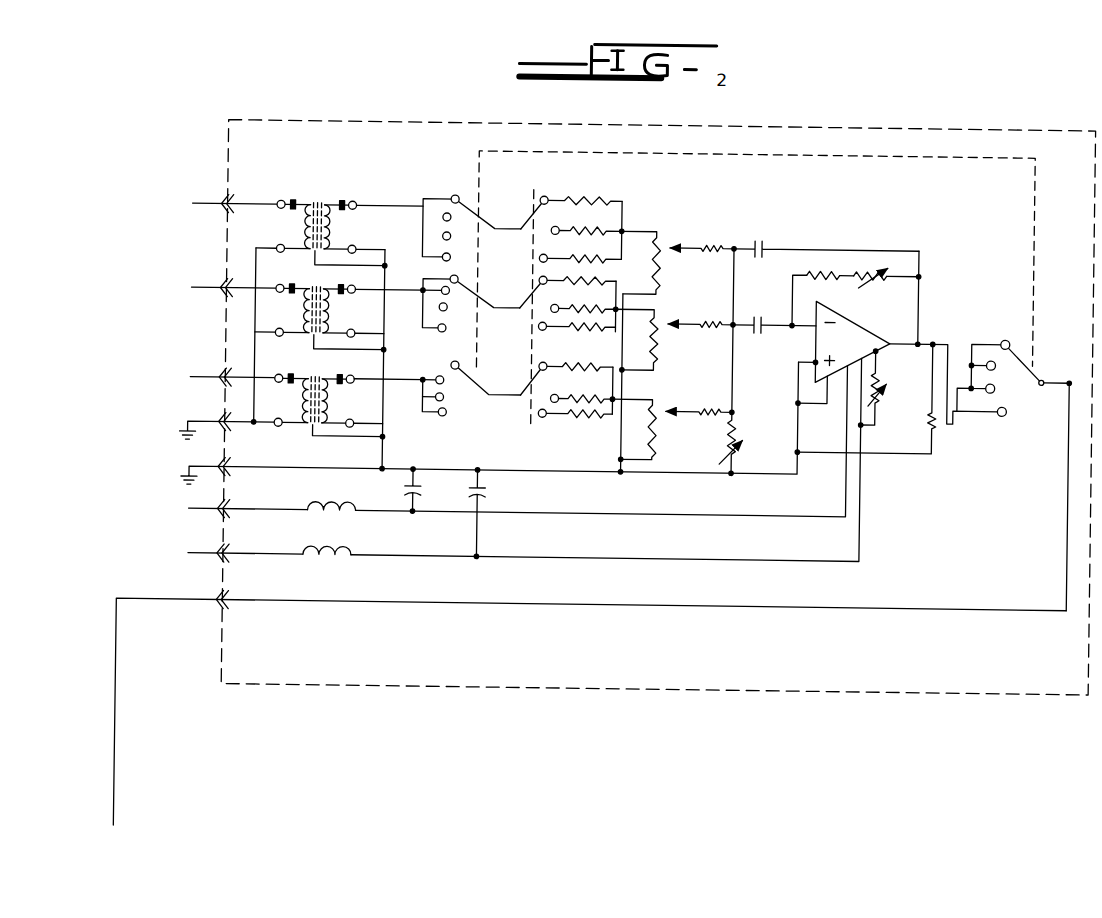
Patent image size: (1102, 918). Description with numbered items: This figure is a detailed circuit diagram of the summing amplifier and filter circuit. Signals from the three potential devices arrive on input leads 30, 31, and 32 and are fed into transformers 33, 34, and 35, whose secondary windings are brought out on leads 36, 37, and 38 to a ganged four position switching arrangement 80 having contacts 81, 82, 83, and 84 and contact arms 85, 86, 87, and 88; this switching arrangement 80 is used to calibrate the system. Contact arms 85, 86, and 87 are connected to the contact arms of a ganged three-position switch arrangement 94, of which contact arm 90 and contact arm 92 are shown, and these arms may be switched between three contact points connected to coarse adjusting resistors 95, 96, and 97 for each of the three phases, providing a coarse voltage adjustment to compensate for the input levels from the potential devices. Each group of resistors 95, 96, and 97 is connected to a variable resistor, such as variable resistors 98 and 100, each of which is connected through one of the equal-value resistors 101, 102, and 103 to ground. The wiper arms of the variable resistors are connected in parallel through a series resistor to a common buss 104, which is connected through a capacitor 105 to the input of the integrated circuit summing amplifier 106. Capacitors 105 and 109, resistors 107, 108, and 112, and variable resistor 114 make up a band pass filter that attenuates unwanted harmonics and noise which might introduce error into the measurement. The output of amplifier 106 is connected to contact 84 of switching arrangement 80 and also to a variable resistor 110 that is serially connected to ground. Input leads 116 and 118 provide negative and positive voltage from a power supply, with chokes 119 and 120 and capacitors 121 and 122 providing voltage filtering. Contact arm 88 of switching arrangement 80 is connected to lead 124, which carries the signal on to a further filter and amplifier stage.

The input lead 30 is at (190, 381).
The input lead 31 is at (186, 291).
The input lead 32 is at (207, 206).
The transformer 33 is at (318, 208).
The transformer 34 is at (306, 295).
The transformer 35 is at (313, 380).
The transformer output lead 36 is at (397, 207).
The transformer output lead 37 is at (404, 290).
The transformer output lead 38 is at (421, 381).
The ganged four position switching arrangement 80 is at (437, 178).
The contact 81 is at (458, 198).
The contact 82 is at (440, 220).
The contact 83 is at (449, 239).
The contact 84 is at (446, 261).
The contact arm 85 is at (472, 208).
The contact arm 86 is at (473, 289).
The contact arm 87 is at (472, 375).
The contact arm 88 is at (1043, 369).
The contact arm 90 is at (540, 208).
The contact arm 92 is at (530, 405).
The ganged three-position switch arrangement 94 is at (532, 182).
The coarse adjusting resistor 95 is at (587, 196).
The coarse adjusting resistor 96 is at (597, 229).
The coarse adjusting resistor 97 is at (598, 257).
The variable resistor 98 is at (663, 243).
The variable resistor 100 is at (661, 409).
The resistor 101 is at (661, 281).
The resistor 102 is at (661, 356).
The resistor 103 is at (654, 447).
The common buss 104 is at (734, 377).
The capacitor 105 is at (758, 315).
The integrated circuit summing amplifier 106 is at (851, 348).
The resistor 107 is at (821, 271).
The resistor 108 is at (868, 283).
The capacitor 109 is at (767, 242).
The variable resistor 110 is at (940, 428).
The resistor 112 is at (736, 432).
The variable resistor 114 is at (744, 458).
The input lead 116 is at (245, 513).
The input lead 118 is at (247, 557).
The choke 119 is at (343, 511).
The choke 120 is at (338, 555).
The capacitor 121 is at (421, 490).
The capacitor 122 is at (487, 490).
The lead 124 is at (791, 604).